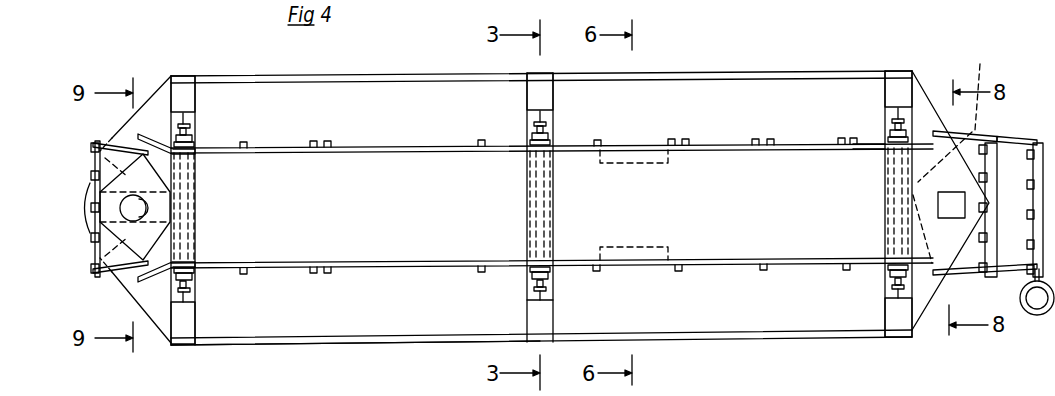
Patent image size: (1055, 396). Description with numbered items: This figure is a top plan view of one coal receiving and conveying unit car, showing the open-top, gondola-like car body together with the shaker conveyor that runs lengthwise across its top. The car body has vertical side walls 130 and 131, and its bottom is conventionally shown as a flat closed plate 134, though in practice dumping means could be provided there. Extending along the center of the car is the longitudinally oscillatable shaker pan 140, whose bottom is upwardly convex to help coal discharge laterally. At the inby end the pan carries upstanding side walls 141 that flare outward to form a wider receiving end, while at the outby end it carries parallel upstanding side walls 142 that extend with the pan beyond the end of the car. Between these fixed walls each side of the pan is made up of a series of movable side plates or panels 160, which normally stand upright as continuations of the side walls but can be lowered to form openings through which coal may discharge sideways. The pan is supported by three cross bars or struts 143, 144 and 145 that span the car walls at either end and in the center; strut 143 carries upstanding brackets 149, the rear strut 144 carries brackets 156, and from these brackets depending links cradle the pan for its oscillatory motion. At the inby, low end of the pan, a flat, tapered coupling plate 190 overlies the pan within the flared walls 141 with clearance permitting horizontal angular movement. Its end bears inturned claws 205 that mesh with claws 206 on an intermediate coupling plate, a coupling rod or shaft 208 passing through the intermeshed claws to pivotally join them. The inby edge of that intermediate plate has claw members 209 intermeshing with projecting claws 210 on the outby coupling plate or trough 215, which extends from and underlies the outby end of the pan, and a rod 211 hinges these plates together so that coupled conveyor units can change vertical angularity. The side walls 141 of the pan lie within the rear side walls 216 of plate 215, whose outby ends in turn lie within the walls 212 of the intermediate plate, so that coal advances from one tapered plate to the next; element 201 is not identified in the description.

The vertical side wall 130 is at (662, 334).
The vertical side wall 131 is at (678, 80).
The flat closed plate 134 is at (355, 316).
The shaker pan 140 is at (688, 168).
The upstanding side walls 141 is at (213, 150).
The upstanding side walls 142 is at (860, 147).
The cross bar or strut 143 is at (183, 93).
The cross bar or strut 144 is at (893, 90).
The cross bar or strut 145 is at (540, 90).
The upstanding brackets 149 is at (193, 285).
The brackets 156 is at (884, 300).
The movable side plates or panels 160 is at (268, 150).
The coupling plate 190 is at (112, 160).
The arm extension 201 is at (1000, 136).
The inturned claws 205 is at (92, 272).
The claws 206 is at (1045, 145).
The coupling rod or shaft 208 is at (1036, 285).
The claw members 209 is at (1007, 157).
The projecting claws 210 is at (1034, 278).
The rod 211 is at (990, 275).
The walls 212 is at (1034, 155).
The outby coupling plate or trough 215 is at (952, 153).
The rear side walls 216 is at (957, 128).